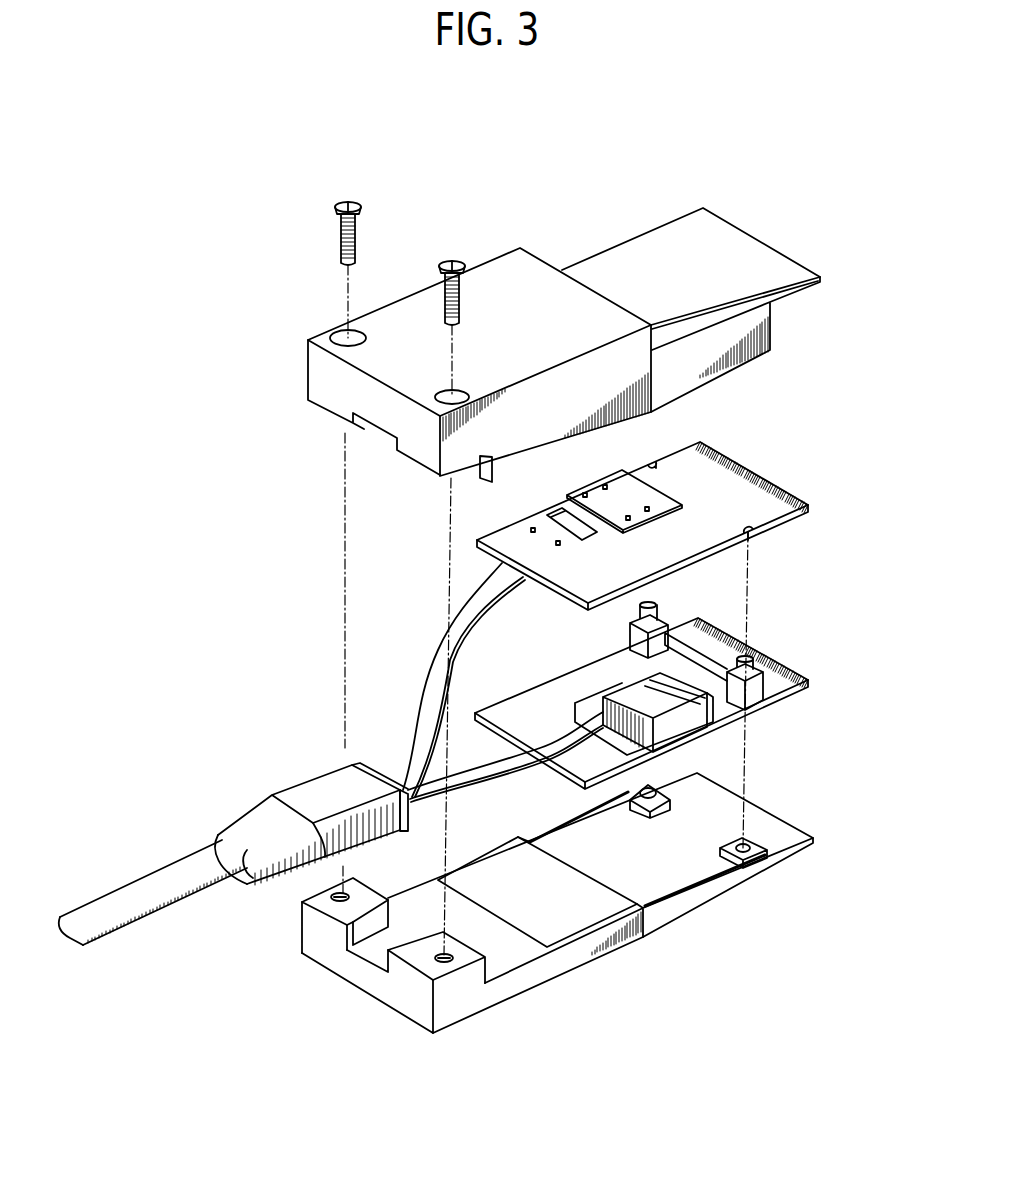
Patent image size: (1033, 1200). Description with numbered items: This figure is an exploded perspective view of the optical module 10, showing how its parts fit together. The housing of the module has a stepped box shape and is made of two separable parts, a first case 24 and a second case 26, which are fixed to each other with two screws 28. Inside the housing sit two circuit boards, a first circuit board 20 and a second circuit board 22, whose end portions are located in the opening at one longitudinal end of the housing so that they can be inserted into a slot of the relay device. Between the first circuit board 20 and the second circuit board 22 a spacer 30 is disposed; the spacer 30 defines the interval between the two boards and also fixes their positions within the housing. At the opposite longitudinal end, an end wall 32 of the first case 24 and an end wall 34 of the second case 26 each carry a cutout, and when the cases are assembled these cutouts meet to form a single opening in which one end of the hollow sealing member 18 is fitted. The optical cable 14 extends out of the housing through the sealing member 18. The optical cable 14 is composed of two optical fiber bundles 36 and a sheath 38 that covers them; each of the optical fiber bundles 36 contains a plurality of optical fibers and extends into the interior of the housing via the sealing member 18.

The optical module 10 is at (742, 163).
The optical cable 14 is at (173, 867).
The sealing member 18 is at (280, 792).
The first circuit board 20 is at (810, 505).
The second circuit board 22 is at (807, 677).
The first case 24 is at (503, 252).
The second case 26 is at (587, 963).
The screws 28 is at (335, 207).
The spacer 30 is at (766, 695).
The end wall of the first case 32 is at (328, 400).
The end wall of the second case 34 is at (313, 942).
The optical fiber bundles 36 is at (423, 680).
The sheath 38 is at (207, 850).